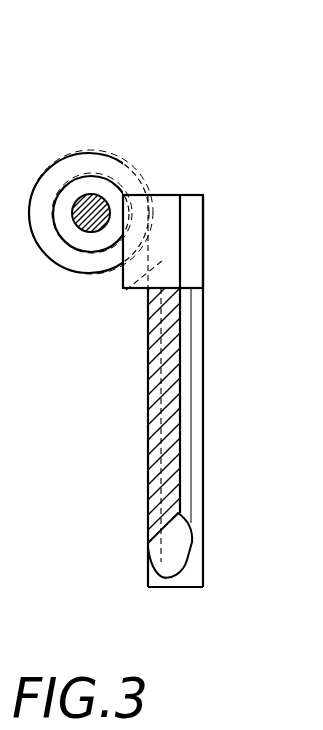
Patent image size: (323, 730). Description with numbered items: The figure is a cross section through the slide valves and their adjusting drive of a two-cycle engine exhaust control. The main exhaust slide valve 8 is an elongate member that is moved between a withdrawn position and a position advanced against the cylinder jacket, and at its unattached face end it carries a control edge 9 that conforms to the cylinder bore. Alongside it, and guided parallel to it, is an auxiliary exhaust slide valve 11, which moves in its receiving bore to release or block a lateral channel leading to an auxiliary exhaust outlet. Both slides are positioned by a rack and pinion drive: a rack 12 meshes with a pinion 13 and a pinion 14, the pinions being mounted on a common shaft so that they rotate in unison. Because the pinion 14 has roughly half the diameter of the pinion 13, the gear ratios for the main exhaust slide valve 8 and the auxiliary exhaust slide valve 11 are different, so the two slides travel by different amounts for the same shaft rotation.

The main exhaust slide valve 8 is at (185, 448).
The control edge 9 is at (175, 555).
The auxiliary exhaust slide valve 11 is at (193, 568).
The rack 12 is at (123, 288).
The pinion 13 is at (77, 168).
The pinion 14 is at (103, 192).